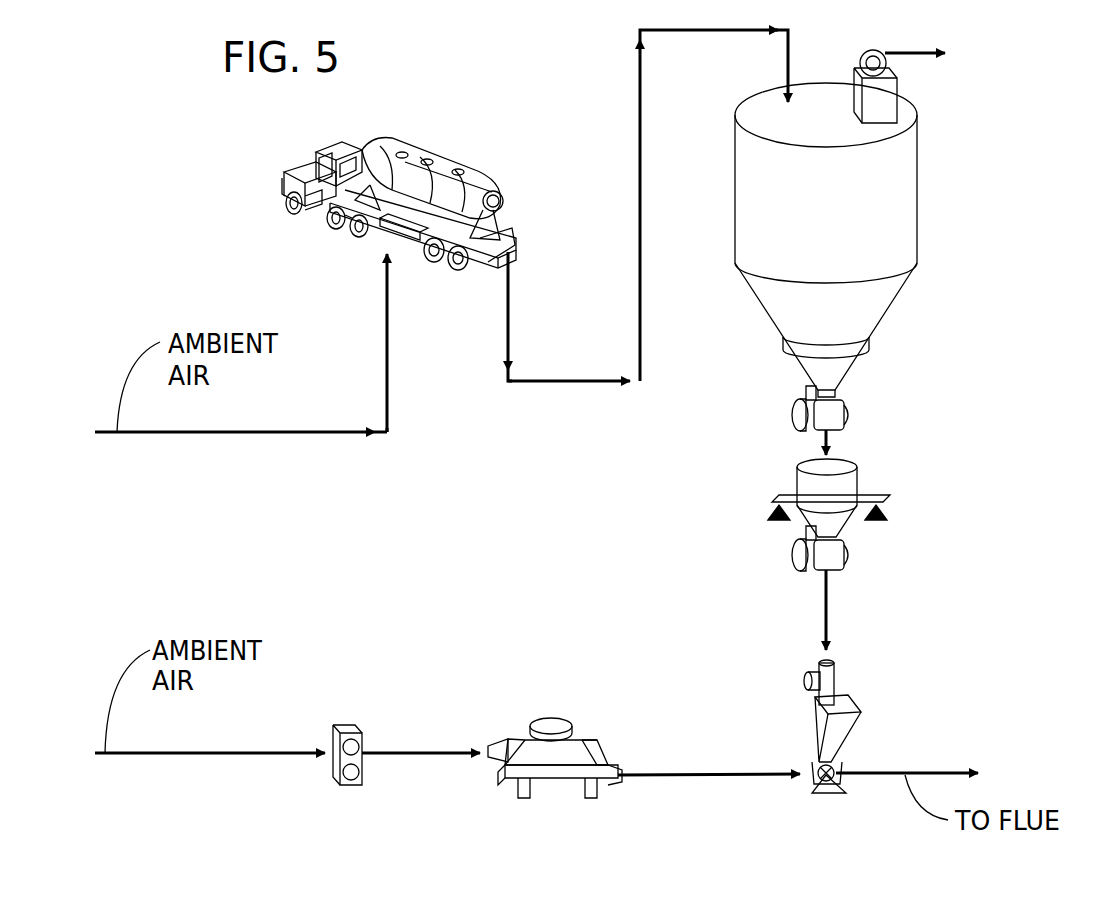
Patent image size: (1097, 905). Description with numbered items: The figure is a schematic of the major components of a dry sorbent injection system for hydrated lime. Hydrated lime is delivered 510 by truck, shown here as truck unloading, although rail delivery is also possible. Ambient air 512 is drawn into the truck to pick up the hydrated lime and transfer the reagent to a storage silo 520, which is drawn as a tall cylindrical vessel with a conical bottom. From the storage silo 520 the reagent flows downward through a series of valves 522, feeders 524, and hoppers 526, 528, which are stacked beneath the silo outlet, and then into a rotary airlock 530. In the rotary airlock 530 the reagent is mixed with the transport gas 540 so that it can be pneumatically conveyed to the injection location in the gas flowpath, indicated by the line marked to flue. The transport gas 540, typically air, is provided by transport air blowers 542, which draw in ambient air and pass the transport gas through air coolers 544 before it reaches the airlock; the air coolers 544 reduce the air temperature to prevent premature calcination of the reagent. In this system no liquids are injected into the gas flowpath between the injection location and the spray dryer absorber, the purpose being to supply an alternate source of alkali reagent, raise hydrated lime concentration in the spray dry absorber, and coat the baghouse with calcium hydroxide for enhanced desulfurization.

The hydrated lime delivery 510 is at (413, 138).
The ambient air 512 is at (390, 316).
The storage silo 520 is at (865, 255).
The valves 522 is at (840, 425).
The feeders 524 is at (840, 565).
The hopper 526 is at (810, 492).
The hopper 528 is at (828, 770).
The rotary airlock 530 is at (833, 770).
The transport gas 540 is at (245, 753).
The transport air blowers 542 is at (346, 735).
The air coolers 544 is at (565, 728).